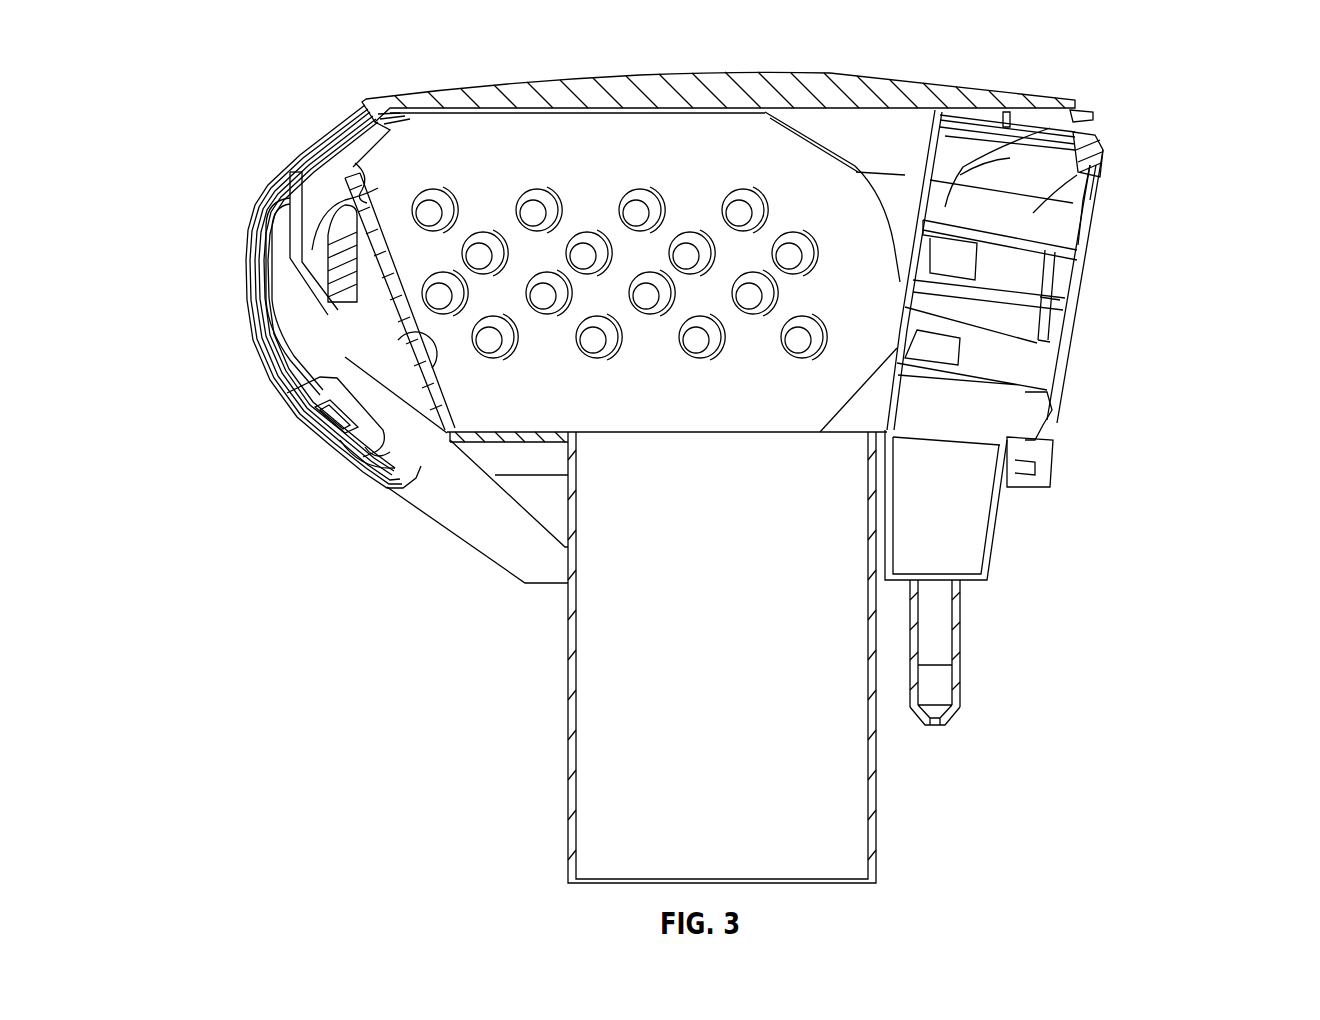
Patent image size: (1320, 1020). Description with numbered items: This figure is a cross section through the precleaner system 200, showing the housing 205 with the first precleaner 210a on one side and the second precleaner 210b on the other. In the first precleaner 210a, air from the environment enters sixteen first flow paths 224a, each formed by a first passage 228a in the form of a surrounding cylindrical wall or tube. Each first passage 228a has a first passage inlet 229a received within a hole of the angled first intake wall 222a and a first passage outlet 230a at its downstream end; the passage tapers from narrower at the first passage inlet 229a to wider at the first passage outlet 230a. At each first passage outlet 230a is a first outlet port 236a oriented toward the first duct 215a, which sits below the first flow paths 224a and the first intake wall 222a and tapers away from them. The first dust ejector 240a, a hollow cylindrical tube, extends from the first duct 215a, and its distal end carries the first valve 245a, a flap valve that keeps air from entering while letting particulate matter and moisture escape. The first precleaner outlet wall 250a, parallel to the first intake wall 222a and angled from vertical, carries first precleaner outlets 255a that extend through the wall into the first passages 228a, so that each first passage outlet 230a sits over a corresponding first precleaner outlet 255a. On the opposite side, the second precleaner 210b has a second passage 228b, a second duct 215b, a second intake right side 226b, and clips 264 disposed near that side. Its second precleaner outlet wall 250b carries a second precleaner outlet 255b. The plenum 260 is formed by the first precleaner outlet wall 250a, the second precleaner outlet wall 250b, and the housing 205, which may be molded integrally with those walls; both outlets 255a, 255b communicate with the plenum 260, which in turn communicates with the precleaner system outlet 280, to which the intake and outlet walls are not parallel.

The nozzle assembly 200 is at (258, 92).
The housing 205 is at (910, 78).
The first precleaner 210a is at (1150, 358).
The second precleaner 210b is at (240, 265).
The first duct 215a is at (978, 525).
The second duct 215b is at (497, 528).
The first intake wall 222a is at (1090, 195).
The first flow paths 224a is at (1073, 330).
The second intake right side 226b is at (247, 305).
The first passage 228a is at (1085, 168).
The second passage 228b is at (320, 413).
The first passage inlet 229a is at (1085, 240).
The first passage outlet 230a is at (1090, 117).
The first outlet port 236a is at (1040, 272).
The first dust ejector 240a is at (955, 635).
The first valve 245a is at (958, 705).
The first precleaner outlet wall 250a is at (947, 207).
The second precleaner outlet wall 250b is at (618, 128).
The first precleaner outlet 255a is at (1048, 395).
The second precleaner outlet 255b is at (537, 200).
The plenum 260 is at (830, 170).
The clips 264 is at (360, 445).
The precleaner system outlet 280 is at (568, 760).